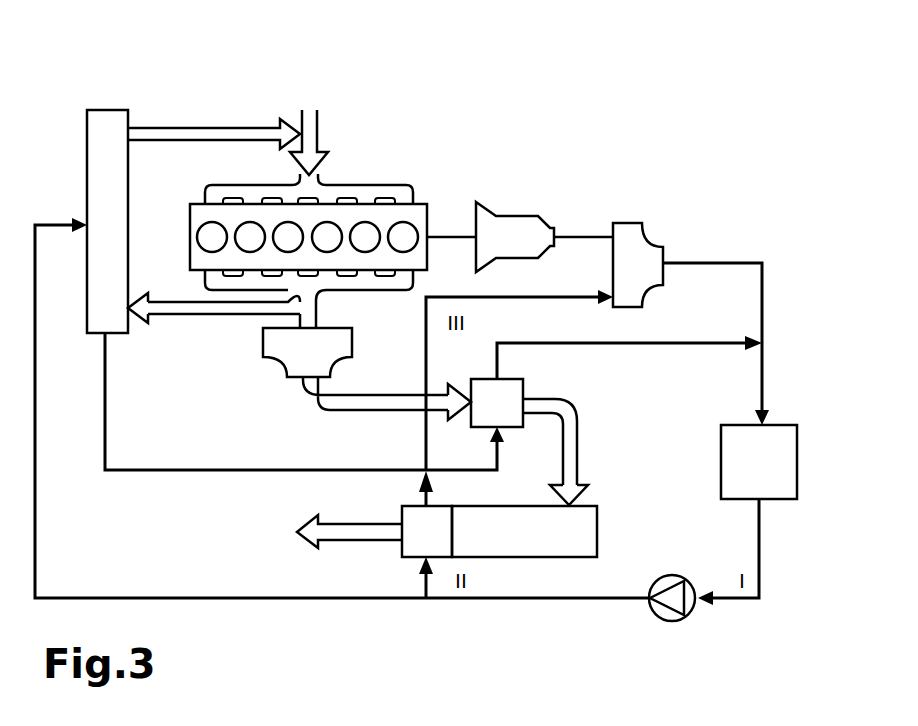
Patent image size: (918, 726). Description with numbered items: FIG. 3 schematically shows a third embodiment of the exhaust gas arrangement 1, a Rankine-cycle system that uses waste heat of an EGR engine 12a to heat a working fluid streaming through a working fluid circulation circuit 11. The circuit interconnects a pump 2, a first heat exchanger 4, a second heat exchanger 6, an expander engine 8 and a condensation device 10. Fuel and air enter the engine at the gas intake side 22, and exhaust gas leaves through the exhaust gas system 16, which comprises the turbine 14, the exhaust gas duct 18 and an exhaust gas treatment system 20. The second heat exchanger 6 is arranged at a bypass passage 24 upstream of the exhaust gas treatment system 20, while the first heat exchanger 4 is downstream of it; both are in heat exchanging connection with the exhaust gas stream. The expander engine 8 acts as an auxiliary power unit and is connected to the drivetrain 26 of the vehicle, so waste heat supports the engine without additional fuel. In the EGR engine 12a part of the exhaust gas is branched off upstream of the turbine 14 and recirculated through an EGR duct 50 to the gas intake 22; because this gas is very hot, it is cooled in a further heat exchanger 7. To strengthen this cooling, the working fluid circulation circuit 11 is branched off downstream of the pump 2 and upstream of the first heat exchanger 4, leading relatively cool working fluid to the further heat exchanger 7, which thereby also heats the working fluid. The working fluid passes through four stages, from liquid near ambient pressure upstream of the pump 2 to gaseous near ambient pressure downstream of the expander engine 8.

The exhaust gas arrangement 1 is at (801, 307).
The pump 2 is at (676, 578).
The first heat exchanger 4 is at (374, 534).
The second heat exchanger 6 is at (314, 401).
The further heat exchanger 7 is at (107, 221).
The expander engine 8 is at (638, 265).
The condensation device 10 is at (759, 462).
The working fluid circulation circuit 11 is at (570, 598).
The EGR engine 12a is at (430, 218).
The turbine 14 is at (307, 352).
The exhaust gas system 16 is at (310, 414).
The exhaust gas duct 18 is at (575, 405).
The exhaust gas treatment system 20 is at (524, 531).
The gas intake side 22 is at (309, 128).
The bypass passage 24 is at (680, 344).
The drivetrain 26 is at (520, 237).
The EGR duct 50 is at (163, 128).